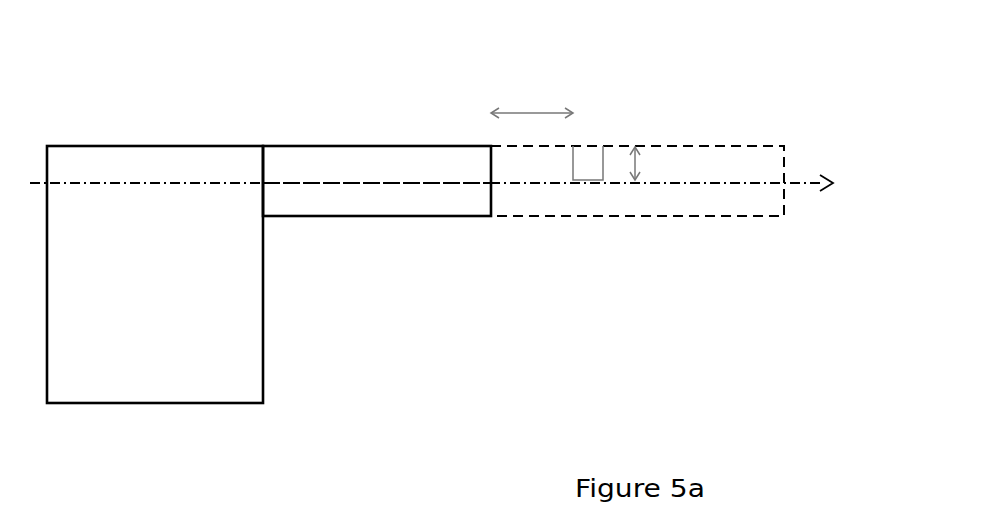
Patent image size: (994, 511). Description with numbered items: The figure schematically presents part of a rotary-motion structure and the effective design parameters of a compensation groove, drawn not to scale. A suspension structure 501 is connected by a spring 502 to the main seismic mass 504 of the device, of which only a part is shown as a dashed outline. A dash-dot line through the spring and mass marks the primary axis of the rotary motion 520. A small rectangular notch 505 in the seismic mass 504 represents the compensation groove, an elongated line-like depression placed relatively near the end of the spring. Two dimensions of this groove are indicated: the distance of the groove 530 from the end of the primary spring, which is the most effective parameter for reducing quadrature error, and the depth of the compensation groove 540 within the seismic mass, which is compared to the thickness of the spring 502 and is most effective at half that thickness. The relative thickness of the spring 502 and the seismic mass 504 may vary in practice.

The suspension structure 501 is at (173, 153).
The spring 502 is at (393, 157).
The main seismic mass 504 is at (737, 160).
The notch / marker 505 is at (583, 163).
The primary axis of the rotary motion 520 is at (302, 183).
The distance of the groove from the end of the primary spring 530 is at (532, 94).
The depth of the compensation groove 540 is at (665, 165).